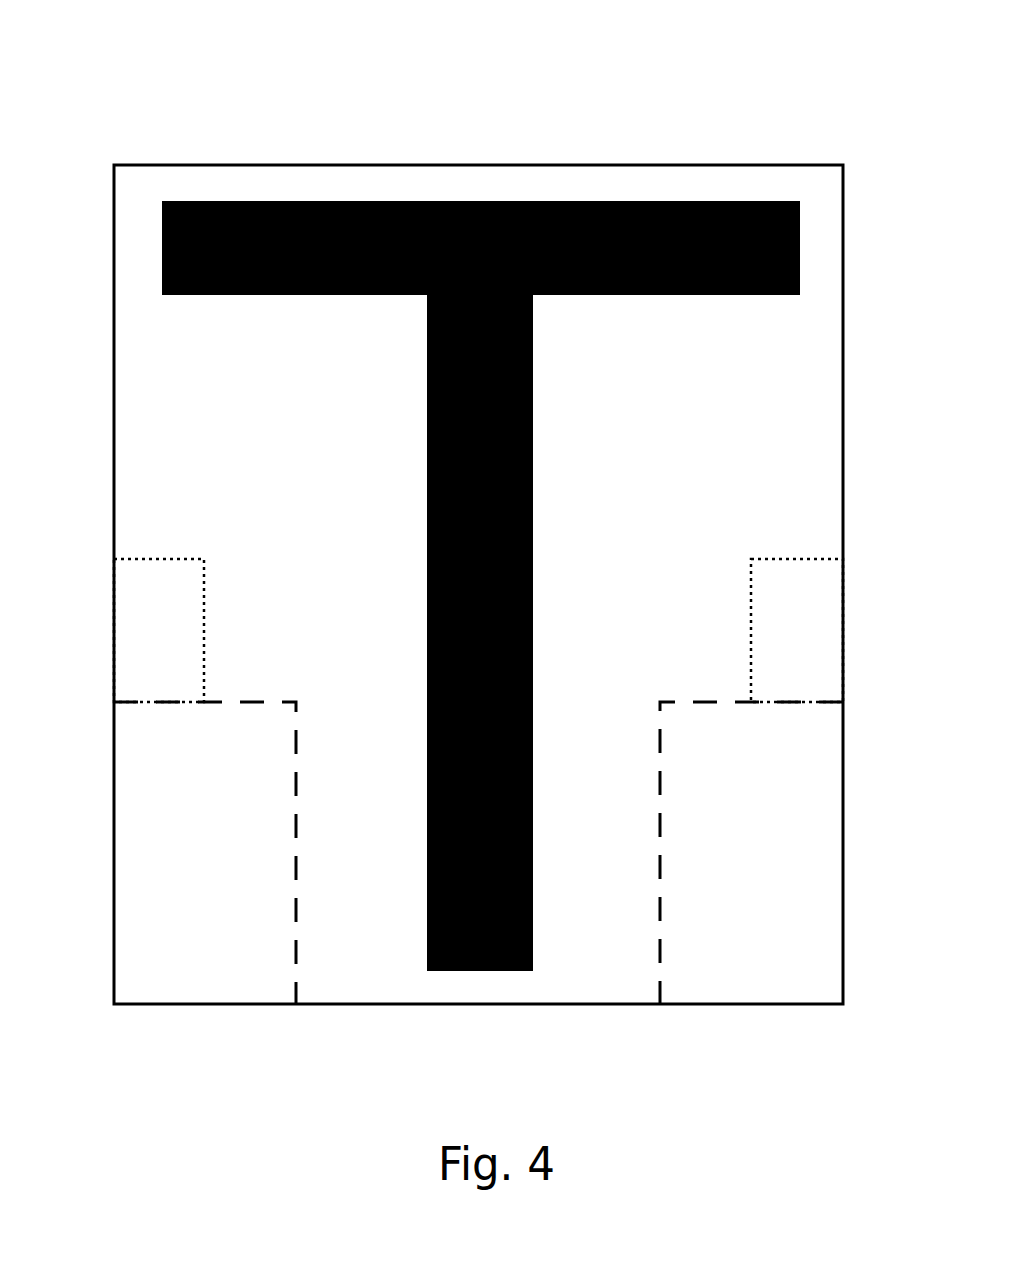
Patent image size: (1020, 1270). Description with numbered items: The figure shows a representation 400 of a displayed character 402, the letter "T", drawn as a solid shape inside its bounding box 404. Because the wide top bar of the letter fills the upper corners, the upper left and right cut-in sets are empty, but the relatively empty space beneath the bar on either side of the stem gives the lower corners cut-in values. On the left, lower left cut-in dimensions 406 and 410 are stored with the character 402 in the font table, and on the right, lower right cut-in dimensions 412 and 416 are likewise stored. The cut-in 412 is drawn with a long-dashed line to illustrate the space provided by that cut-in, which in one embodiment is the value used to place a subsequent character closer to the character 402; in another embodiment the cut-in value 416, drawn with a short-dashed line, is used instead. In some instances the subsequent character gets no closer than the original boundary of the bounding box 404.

The representation 400 is at (259, 112).
The displayed character 402 is at (224, 201).
The bounding box 404 is at (640, 165).
The lower left cut-in dimension 406 is at (296, 935).
The lower left cut-in dimension 410 is at (204, 612).
The lower right cut-in dimension 412 is at (661, 935).
The lower right cut-in dimension 416 is at (751, 638).